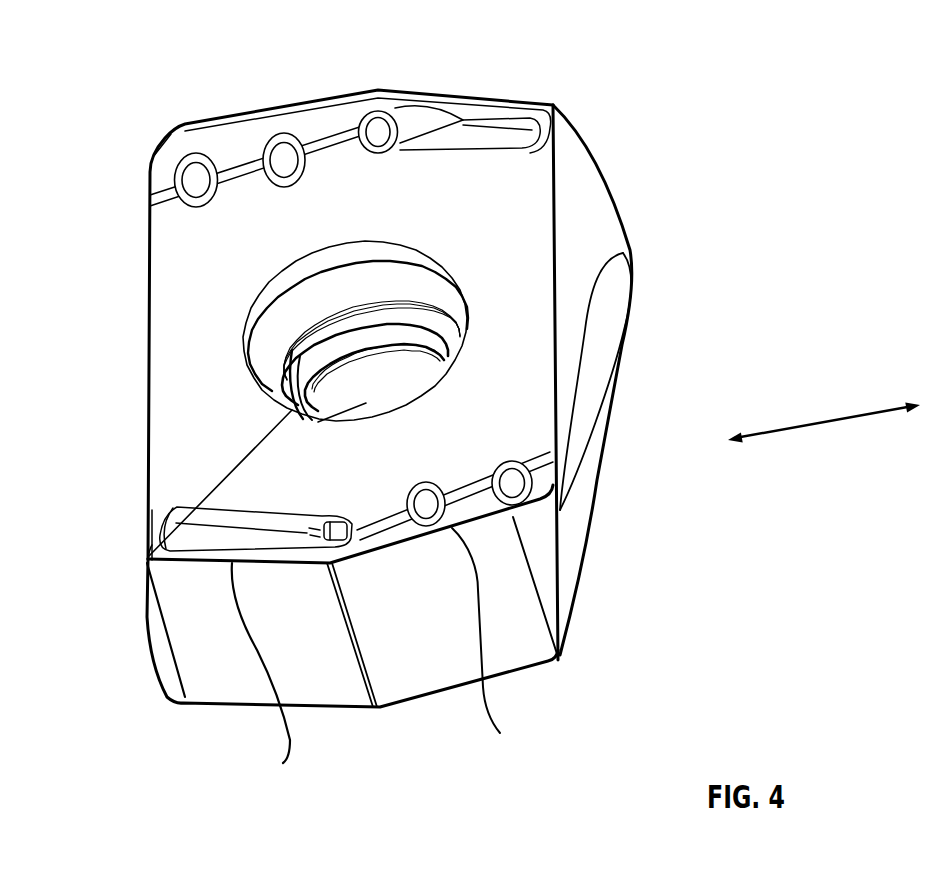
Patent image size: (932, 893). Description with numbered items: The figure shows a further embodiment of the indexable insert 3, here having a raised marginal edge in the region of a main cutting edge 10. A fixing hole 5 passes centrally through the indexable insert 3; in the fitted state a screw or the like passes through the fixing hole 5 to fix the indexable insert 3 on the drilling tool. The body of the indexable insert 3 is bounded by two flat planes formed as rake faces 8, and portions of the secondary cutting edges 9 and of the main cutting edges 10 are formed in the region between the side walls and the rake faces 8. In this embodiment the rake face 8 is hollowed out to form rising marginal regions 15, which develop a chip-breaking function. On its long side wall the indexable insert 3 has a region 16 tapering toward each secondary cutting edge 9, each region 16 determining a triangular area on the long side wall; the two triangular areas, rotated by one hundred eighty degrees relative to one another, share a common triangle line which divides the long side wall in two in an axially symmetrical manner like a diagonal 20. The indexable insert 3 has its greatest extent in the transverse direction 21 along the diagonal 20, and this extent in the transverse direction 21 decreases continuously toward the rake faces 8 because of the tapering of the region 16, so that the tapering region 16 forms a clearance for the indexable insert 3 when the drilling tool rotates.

The indexable insert 3 is at (508, 95).
The fixing hole 5 is at (147, 557).
The rake face 8 is at (508, 183).
The secondary cutting edge 9 is at (150, 467).
The main cutting edge 10 is at (290, 103).
The rising marginal region 15 is at (225, 142).
The tapering region 16 is at (590, 200).
The diagonal 20 is at (583, 350).
The transverse direction 21 is at (833, 423).